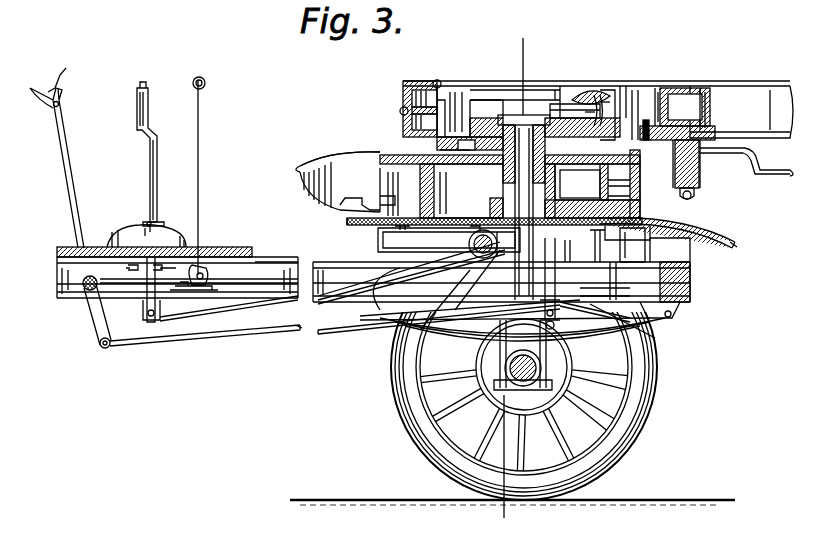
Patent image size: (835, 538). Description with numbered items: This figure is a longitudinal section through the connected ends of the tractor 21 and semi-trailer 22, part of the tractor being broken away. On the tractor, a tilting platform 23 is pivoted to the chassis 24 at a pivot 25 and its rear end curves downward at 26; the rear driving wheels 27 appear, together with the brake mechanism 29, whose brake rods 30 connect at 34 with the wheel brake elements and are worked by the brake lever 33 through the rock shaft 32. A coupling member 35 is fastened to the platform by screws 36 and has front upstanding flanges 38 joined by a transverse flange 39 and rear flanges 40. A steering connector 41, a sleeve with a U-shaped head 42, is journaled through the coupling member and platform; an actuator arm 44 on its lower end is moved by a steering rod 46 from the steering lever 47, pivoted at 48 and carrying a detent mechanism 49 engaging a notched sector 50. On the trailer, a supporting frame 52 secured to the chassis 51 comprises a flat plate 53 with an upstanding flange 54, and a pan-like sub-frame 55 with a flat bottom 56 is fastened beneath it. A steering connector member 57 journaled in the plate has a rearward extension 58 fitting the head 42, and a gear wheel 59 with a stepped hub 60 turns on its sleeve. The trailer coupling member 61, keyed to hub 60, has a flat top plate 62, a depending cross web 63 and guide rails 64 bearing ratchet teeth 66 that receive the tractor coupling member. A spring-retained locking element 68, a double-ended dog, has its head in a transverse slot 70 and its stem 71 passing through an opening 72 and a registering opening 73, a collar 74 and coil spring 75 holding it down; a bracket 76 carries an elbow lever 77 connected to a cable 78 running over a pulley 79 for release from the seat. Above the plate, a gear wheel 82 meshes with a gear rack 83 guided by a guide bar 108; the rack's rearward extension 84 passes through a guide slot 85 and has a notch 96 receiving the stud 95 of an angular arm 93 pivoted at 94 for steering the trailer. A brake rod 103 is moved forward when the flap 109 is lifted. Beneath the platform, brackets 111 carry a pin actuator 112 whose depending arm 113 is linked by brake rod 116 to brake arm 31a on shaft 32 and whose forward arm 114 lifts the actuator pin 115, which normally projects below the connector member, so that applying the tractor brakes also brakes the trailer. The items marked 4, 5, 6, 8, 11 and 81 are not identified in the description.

The axis line 4 is at (514, 38).
The pin 5 is at (403, 122).
The body 6 is at (300, 166).
The frame member 8 is at (622, 161).
The shaft 11 is at (524, 212).
The tractor 21 is at (234, 248).
The semi-trailer 22 is at (700, 84).
The tilting platform 23 is at (706, 229).
The chassis 24 is at (280, 261).
The pivot 25 is at (470, 251).
The downwardly curved rear end 26 is at (737, 246).
The rear traction or driving wheels 27 is at (652, 396).
The brake mechanism 29 is at (205, 342).
The brake rods 30 is at (296, 327).
The brake arm 31a is at (98, 322).
The rock shaft 32 is at (83, 288).
The brake lever 33 is at (72, 161).
The brake connection 34 is at (500, 331).
The coupling member 35 is at (392, 239).
The screws 36 is at (644, 208).
The upstanding spaced flanges 38 is at (468, 191).
The transverse upstanding flange 39 is at (420, 185).
The upstanding spaced flanges 40 is at (597, 182).
The steering connector 41 is at (492, 198).
The U-shaped head 42 is at (405, 160).
The actuator arm 44 is at (501, 290).
The steering rod 46 is at (372, 269).
The steering lever 47 is at (158, 197).
The pivot 48 is at (147, 276).
The detent mechanism 49 is at (166, 222).
The notched sector 50 is at (132, 226).
The chassis 51 is at (403, 96).
The supporting frame 52 is at (462, 108).
The flat plate 53 is at (484, 118).
The upstanding flange 54 is at (437, 82).
The pan-like sub-frame 55 is at (446, 148).
The flat bottom 56 is at (515, 102).
The steering connector member 57 is at (548, 116).
The rearwardly-directed extension 58 is at (620, 199).
The gear wheel 59 is at (598, 96).
The stepped hub 60 is at (526, 115).
The trailer coupling member 61 is at (368, 161).
The flat top plate 62 is at (380, 179).
The depending cross web 63 is at (662, 217).
The guide rails 64 is at (345, 207).
The ratchet teeth 66 is at (360, 224).
The spring-retained locking element 68 is at (650, 237).
The transverse slot 70 is at (694, 193).
The stem 71 is at (665, 278).
The opening 72 is at (592, 191).
The registering opening 73 is at (645, 243).
The collar 74 is at (690, 271).
The coil spring 75 is at (660, 250).
The bracket 76 is at (685, 240).
The elbow lever 77 is at (692, 267).
The cable 78 is at (199, 279).
The cable sheave or pulley 79 is at (210, 276).
The ring 81 is at (635, 90).
The gear wheel 82 is at (570, 100).
The gear rack 83 is at (612, 90).
The rearward extension 84 is at (685, 107).
The guide slot 85 is at (647, 120).
The angular arm 93 is at (705, 130).
The pivot 94 is at (741, 112).
The upstanding pin or stud 95 is at (693, 105).
The notch 96 is at (703, 118).
The brake rod 103 is at (795, 169).
The guide bar 108 is at (605, 98).
The flap 109 is at (590, 96).
The spaced brackets 111 is at (650, 324).
The pin actuator 112 is at (541, 283).
The depending arm 113 is at (655, 341).
The forwardly-extending arm 114 is at (445, 346).
The actuator pin 115 is at (380, 333).
The brake rod 116 is at (330, 329).